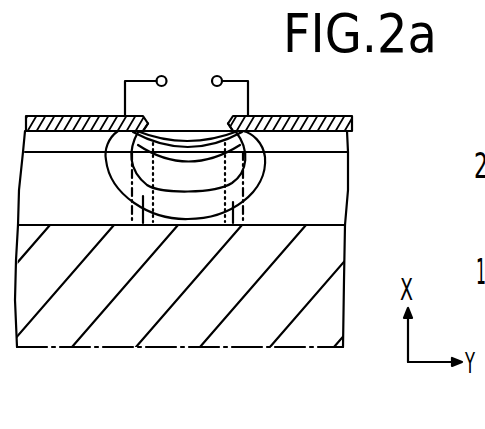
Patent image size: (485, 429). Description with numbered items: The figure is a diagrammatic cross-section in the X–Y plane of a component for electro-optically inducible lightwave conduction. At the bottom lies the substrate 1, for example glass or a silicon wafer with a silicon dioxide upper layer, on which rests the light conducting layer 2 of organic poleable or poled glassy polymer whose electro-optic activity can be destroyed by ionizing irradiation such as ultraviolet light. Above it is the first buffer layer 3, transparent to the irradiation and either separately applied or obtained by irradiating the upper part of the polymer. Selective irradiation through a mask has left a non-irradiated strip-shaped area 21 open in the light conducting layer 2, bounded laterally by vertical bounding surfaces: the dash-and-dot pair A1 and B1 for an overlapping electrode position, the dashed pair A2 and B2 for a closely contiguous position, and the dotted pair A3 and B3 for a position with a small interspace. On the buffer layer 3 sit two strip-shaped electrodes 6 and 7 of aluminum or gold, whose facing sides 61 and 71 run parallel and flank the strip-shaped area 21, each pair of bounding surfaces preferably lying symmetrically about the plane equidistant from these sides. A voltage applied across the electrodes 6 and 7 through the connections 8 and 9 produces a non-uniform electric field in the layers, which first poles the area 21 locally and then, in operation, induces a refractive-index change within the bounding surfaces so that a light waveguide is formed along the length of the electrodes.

The substrate 1 is at (303, 260).
The light conducting layer 2 is at (313, 188).
The strip-shaped area 21 is at (189, 221).
The first buffer layer 3 is at (330, 142).
The strip-shaped electrode 6 is at (82, 115).
The side of electrode 61 is at (149, 123).
The strip-shaped electrode 7 is at (305, 118).
The side of electrode 71 is at (229, 127).
The connection 8 is at (158, 76).
The connection 9 is at (218, 76).
The bounding surface A1 is at (132, 208).
The bounding surface A2 is at (131, 217).
The bounding surface A3 is at (157, 220).
The bounding surface B1 is at (247, 203).
The bounding surface B2 is at (250, 215).
The bounding surface B3 is at (223, 220).